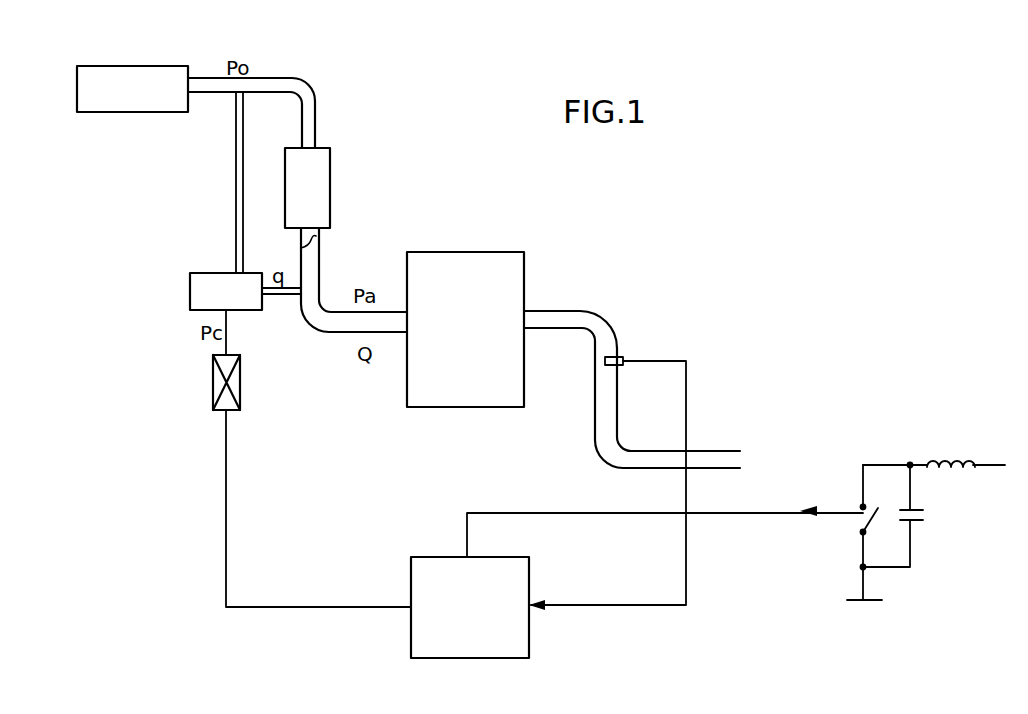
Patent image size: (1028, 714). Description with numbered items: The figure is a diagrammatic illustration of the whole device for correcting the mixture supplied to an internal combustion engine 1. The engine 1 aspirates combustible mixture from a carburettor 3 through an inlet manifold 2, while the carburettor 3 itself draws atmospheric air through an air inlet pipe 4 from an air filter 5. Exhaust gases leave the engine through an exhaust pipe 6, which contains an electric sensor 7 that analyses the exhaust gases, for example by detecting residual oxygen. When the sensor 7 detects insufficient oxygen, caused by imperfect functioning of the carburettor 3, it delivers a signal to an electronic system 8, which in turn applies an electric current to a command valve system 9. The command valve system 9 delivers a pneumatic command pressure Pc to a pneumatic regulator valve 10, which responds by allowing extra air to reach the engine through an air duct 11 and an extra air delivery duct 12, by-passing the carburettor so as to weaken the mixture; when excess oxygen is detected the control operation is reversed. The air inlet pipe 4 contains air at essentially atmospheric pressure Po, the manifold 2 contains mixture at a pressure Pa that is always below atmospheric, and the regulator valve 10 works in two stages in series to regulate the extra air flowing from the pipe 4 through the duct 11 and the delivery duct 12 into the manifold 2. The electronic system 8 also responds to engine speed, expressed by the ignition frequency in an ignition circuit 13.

The internal combustion engine 1 is at (477, 258).
The inlet manifold 2 is at (327, 332).
The carburettor 3 is at (321, 177).
The air inlet pipe 4 is at (269, 84).
The air filter 5 is at (143, 74).
The exhaust pipe 6 is at (562, 319).
The electric sensor 7 is at (614, 357).
The electronic system 8 is at (432, 567).
The command valve system 9 is at (239, 382).
The pneumatic regulator valve 10 is at (190, 282).
The air duct 11 is at (236, 184).
The extra air delivery duct 12 is at (282, 294).
The ignition circuit 13 is at (842, 520).